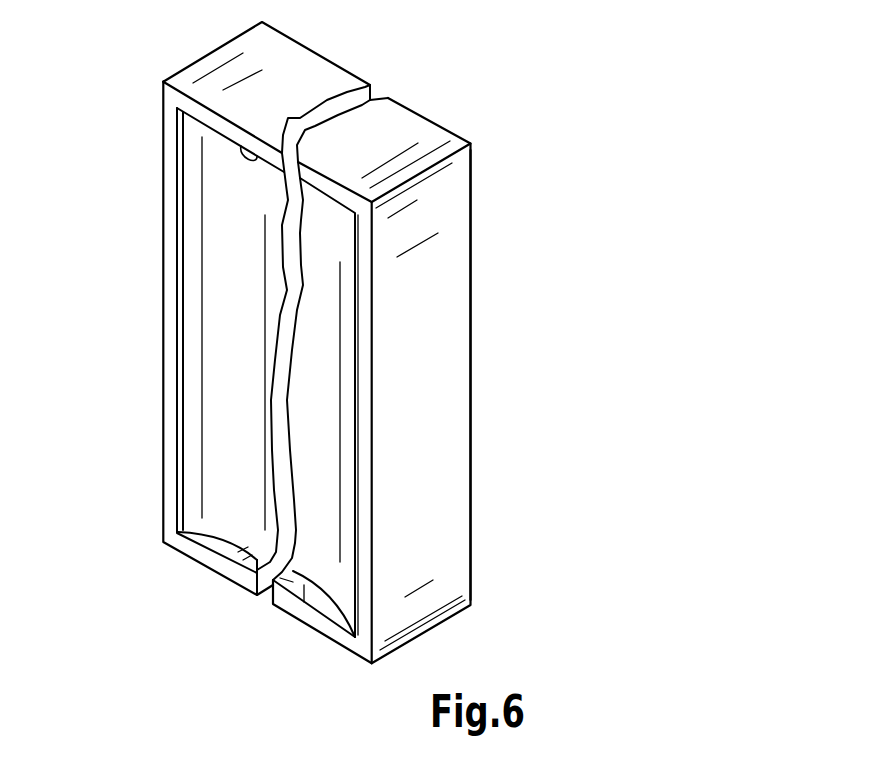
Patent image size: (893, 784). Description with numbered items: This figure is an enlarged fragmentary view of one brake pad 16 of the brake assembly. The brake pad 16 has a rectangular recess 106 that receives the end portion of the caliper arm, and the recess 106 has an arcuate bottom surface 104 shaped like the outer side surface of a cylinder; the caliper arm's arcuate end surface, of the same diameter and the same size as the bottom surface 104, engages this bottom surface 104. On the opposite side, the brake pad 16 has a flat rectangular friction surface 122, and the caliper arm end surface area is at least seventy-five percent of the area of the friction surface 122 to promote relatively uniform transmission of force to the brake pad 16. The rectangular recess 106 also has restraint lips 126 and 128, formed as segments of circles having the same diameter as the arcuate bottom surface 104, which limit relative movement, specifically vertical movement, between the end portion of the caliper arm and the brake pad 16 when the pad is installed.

The brake pad 16 is at (470, 232).
The arcuate bottom surface 104 is at (323, 435).
The rectangular recess 106 is at (180, 418).
The friction surface 122 is at (470, 287).
The restraint lip 126 is at (255, 152).
The restraint lip 128 is at (305, 588).